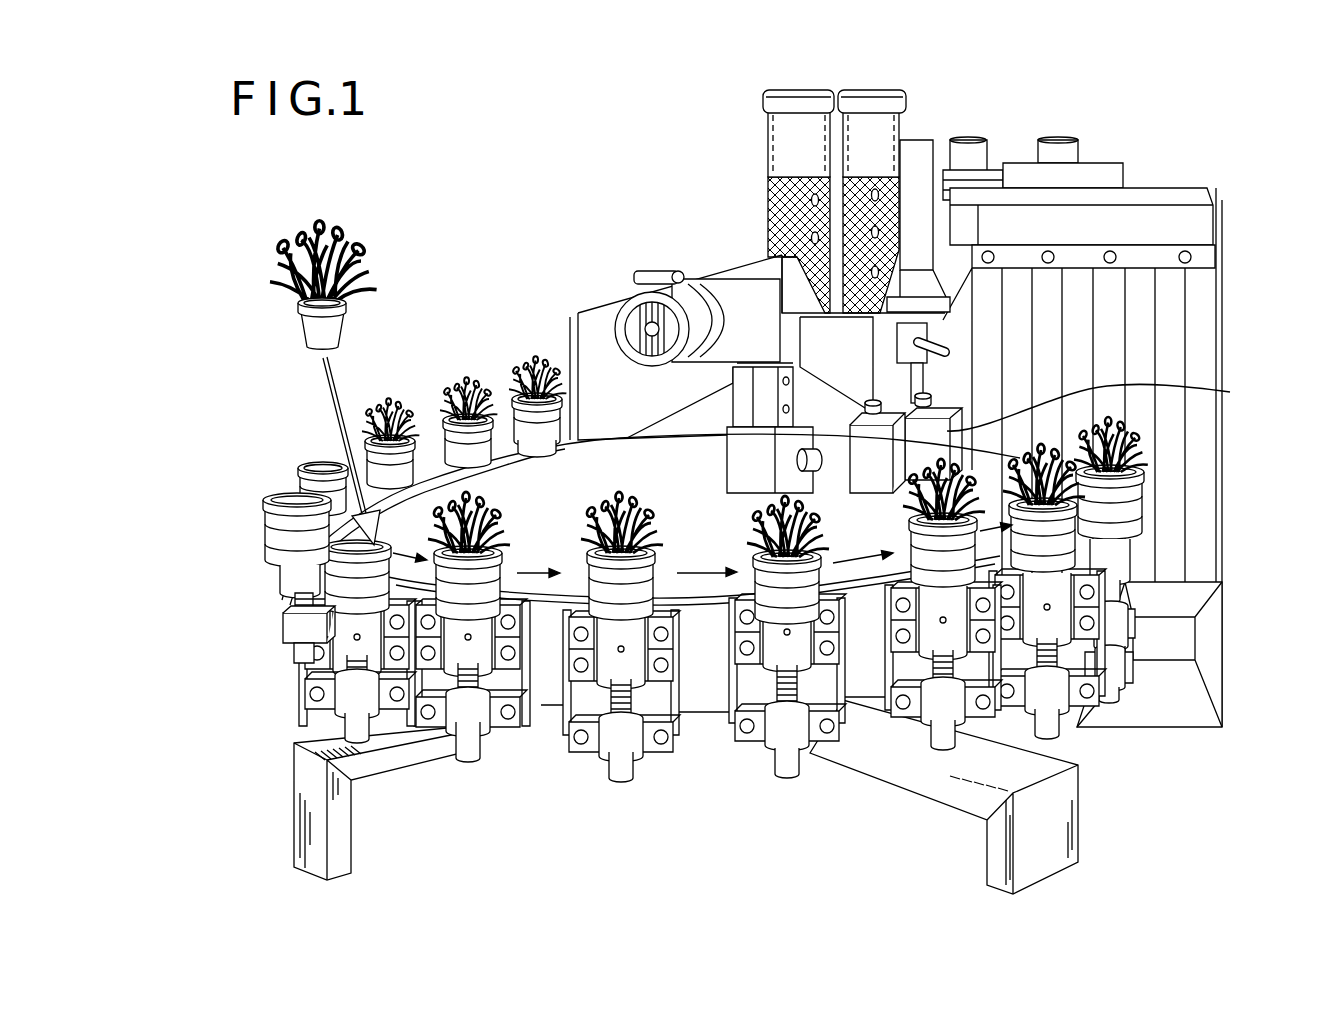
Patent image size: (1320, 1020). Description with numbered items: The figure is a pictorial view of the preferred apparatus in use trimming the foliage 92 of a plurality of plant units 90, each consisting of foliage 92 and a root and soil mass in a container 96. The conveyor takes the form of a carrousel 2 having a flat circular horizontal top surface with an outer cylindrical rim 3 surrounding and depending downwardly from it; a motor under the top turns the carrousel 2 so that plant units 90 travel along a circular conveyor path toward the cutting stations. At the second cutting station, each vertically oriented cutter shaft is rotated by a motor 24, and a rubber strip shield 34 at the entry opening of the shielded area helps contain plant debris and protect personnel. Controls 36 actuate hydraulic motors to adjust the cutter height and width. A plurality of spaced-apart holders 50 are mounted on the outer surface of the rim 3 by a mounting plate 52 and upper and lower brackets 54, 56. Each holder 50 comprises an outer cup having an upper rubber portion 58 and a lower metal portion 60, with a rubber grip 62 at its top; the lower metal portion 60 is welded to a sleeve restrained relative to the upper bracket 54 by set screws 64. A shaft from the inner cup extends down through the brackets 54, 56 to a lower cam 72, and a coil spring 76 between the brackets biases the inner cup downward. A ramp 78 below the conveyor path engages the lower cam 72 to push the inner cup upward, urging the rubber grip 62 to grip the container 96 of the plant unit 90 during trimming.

The carrousel 2 is at (710, 792).
The outer cylindrical rim 3 is at (570, 588).
The motor 24 is at (832, 92).
The rubber strip shield 34 is at (1203, 347).
The controls 36 is at (1230, 392).
The holder 50 is at (266, 582).
The mounting plate 52 is at (541, 693).
The upper bracket 54 is at (668, 625).
The lower bracket 56 is at (647, 775).
The upper rubber portion 58 is at (264, 517).
The lower metal portion 60 is at (264, 538).
The rubber grip 62 is at (298, 490).
The set screws 64 is at (800, 628).
The lower cam 72 is at (480, 752).
The coil spring 76 is at (467, 700).
The ramp 78 is at (1182, 695).
The plant unit 90 is at (319, 262).
The foliage 92 is at (362, 262).
The container 96 is at (346, 323).